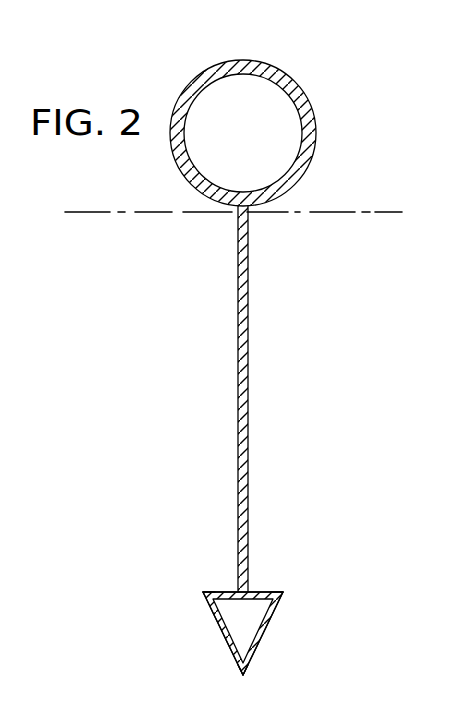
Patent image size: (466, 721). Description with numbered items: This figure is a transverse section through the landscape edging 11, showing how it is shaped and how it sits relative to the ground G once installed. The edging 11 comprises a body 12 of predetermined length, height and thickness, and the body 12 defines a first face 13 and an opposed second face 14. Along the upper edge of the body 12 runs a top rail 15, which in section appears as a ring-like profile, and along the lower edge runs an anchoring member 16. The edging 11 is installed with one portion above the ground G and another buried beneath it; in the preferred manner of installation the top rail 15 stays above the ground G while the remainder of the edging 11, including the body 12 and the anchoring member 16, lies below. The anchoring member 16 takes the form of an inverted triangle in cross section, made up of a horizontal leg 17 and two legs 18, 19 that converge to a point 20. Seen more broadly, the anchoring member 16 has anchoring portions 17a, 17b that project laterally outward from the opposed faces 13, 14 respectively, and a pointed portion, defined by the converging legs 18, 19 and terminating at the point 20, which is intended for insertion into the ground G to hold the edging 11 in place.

The landscape edging 11 is at (158, 325).
The body 12 is at (247, 399).
The first face 13 is at (238, 393).
The second face 14 is at (248, 375).
The top rail 15 is at (288, 82).
The anchoring member 16 is at (246, 622).
The horizontal leg 17 is at (216, 620).
The anchoring portion 17a is at (219, 591).
The anchoring portion 17b is at (268, 591).
The leg 18 is at (225, 652).
The leg 19 is at (273, 623).
The point 20 is at (247, 677).
The ground G is at (338, 212).